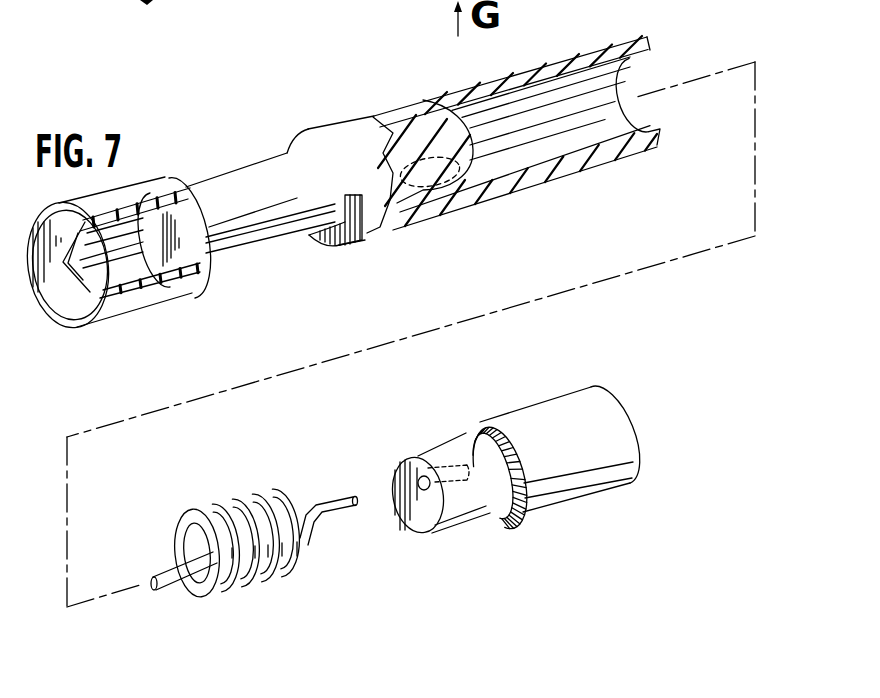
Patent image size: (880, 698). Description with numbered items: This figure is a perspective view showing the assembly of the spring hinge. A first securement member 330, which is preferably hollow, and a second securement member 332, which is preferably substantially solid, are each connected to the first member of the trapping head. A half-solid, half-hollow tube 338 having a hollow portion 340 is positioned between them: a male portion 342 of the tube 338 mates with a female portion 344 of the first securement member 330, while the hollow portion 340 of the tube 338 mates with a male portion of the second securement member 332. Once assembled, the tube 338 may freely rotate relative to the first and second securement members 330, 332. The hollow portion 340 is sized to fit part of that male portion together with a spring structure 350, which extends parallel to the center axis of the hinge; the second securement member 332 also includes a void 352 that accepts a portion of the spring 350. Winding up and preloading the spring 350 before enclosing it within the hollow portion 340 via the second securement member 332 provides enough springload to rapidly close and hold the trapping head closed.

The first securement member 330 is at (167, 303).
The second securement member 332 is at (598, 428).
The half-solid, half-hollow tube 338 is at (612, 53).
The hollow portion 340 is at (565, 130).
The male portion 342 is at (280, 217).
The female portion 344 is at (108, 277).
The spring structure 350 is at (237, 507).
The void 352 is at (443, 460).